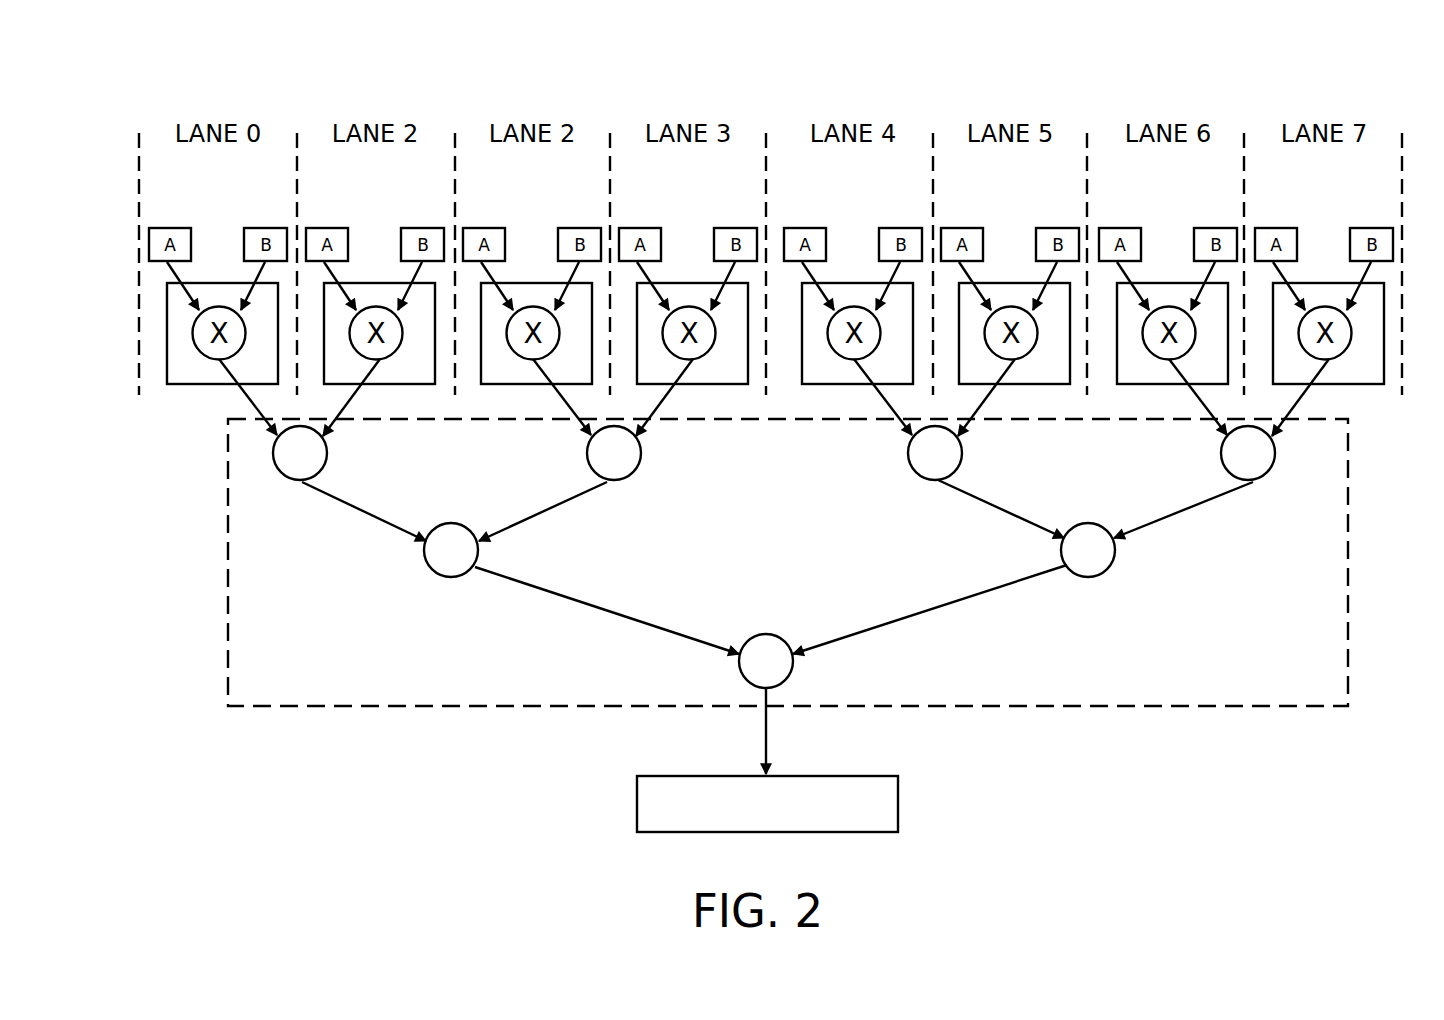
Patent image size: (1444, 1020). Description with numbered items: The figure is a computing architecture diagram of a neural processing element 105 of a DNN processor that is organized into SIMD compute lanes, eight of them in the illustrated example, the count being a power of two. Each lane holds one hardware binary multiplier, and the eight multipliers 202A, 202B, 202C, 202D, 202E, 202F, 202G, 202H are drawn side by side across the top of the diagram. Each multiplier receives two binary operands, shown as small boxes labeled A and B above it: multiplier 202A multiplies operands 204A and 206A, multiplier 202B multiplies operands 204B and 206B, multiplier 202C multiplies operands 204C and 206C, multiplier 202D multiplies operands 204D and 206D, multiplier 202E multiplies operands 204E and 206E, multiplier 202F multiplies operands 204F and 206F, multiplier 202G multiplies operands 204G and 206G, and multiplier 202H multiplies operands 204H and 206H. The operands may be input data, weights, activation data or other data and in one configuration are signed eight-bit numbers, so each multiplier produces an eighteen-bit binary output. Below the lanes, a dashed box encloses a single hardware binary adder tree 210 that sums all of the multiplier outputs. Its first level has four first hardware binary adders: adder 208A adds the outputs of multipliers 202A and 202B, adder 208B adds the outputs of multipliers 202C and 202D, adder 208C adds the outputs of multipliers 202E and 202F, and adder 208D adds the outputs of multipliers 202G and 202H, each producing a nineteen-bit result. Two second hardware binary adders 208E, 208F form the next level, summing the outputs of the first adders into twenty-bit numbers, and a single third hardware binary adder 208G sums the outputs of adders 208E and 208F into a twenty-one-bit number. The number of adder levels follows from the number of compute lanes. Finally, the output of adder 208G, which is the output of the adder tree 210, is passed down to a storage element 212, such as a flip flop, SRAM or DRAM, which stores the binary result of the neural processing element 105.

The neural processing element 105 is at (106, 94).
The hardware binary multiplier 202A is at (207, 359).
The hardware binary multiplier 202B is at (385, 359).
The hardware binary multiplier 202C is at (524, 359).
The hardware binary multiplier 202D is at (698, 359).
The hardware binary multiplier 202E is at (843, 359).
The hardware binary multiplier 202F is at (1017, 359).
The hardware binary multiplier 202G is at (1161, 359).
The hardware binary multiplier 202H is at (1333, 359).
The operand 204A is at (180, 249).
The operand 204B is at (336, 249).
The operand 204C is at (493, 249).
The operand 204D is at (650, 249).
The operand 204E is at (814, 249).
The operand 204F is at (971, 249).
The operand 204G is at (1130, 249).
The operand 204H is at (1286, 249).
The operand 206A is at (252, 249).
The operand 206B is at (409, 249).
The operand 206C is at (566, 249).
The operand 206D is at (722, 249).
The operand 206E is at (887, 249).
The operand 206F is at (1045, 249).
The operand 206G is at (1202, 249).
The operand 206H is at (1358, 249).
The hardware binary adder 208A is at (288, 474).
The hardware binary adder 208B is at (632, 470).
The hardware binary adder 208C is at (918, 468).
The hardware binary adder 208D is at (1260, 472).
The hardware binary adder 208E is at (452, 572).
The hardware binary adder 208F is at (1085, 570).
The hardware binary adder 208G is at (762, 643).
The hardware binary adder tree 210 is at (1333, 575).
The storage element 212 is at (888, 800).